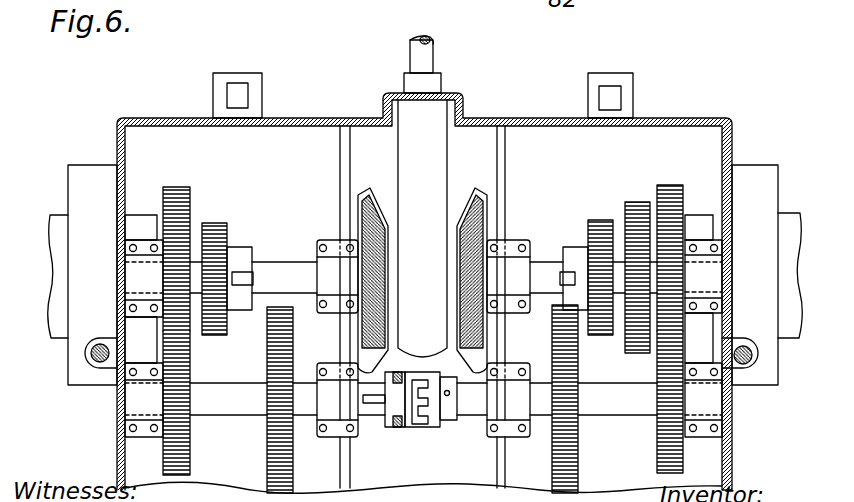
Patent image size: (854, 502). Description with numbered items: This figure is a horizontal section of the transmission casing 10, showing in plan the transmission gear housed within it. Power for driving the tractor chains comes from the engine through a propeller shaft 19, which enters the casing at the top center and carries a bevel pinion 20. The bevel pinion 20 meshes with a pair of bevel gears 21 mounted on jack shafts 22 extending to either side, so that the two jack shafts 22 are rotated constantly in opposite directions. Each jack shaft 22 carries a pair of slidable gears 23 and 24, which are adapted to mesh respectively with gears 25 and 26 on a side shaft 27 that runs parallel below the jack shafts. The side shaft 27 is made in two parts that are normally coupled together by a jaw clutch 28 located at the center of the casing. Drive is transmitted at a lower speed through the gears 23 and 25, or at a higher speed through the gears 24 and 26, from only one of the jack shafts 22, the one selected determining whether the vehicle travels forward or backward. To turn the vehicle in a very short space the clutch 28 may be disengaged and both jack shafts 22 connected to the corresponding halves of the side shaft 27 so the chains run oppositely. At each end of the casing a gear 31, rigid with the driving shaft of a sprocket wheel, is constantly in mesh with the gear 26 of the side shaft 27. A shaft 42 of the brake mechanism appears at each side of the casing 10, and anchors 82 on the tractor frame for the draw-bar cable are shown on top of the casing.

The gear housing 10 is at (683, 120).
The propeller shaft 19 is at (433, 60).
The bevel pinion 20 is at (407, 338).
The bevel gears 21 is at (457, 225).
The jack shafts 22 is at (262, 276).
The slidable gear 23 is at (215, 222).
The slidable gear 24 is at (192, 212).
The gear 25 is at (293, 342).
The gear 26 is at (192, 433).
The side shaft 27 is at (234, 390).
The jaw clutch 28 is at (432, 418).
The gear 31 is at (175, 187).
The shaft 42 is at (97, 365).
The anchor 82 is at (240, 97).